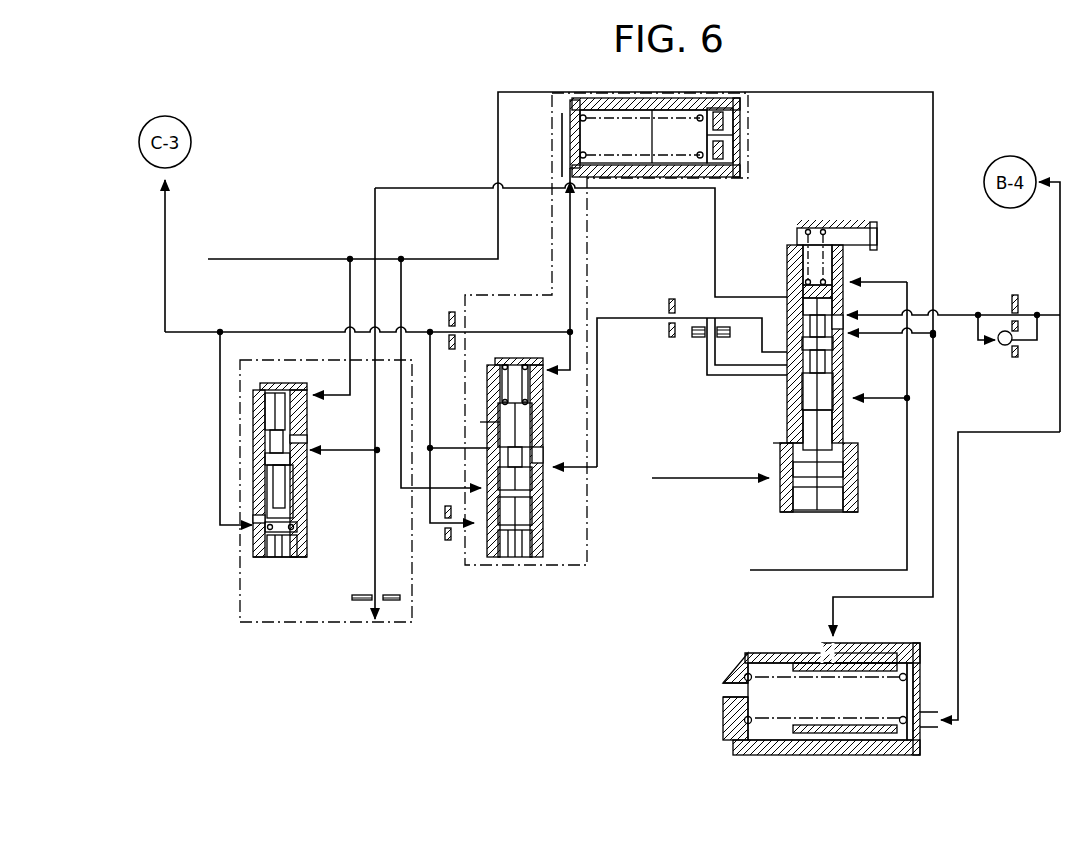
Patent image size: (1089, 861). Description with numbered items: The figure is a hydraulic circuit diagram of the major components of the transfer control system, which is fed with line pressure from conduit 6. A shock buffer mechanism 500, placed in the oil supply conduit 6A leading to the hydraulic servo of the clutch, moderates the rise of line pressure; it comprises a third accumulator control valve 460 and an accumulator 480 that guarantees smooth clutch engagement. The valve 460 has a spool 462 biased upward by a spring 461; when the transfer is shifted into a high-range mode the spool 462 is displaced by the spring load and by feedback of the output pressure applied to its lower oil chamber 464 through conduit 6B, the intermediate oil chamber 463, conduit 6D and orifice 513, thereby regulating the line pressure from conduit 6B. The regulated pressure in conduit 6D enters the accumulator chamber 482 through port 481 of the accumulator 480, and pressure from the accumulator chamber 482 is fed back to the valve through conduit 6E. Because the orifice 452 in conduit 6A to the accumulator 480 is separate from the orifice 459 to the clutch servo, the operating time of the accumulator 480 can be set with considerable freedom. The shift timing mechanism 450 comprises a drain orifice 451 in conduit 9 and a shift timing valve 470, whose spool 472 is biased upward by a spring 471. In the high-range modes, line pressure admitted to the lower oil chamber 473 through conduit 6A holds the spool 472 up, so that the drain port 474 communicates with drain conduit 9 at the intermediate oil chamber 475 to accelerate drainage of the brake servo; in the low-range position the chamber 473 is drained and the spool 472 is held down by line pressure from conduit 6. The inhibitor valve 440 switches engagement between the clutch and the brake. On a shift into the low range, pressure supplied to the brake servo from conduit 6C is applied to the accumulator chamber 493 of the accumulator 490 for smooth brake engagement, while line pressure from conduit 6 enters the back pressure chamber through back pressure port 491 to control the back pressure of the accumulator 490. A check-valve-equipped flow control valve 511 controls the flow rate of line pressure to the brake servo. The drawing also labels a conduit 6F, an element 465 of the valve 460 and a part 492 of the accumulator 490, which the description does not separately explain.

The conduit 6 is at (275, 259).
The oil supply conduit 6A is at (288, 332).
The conduit 6B is at (635, 318).
The conduit 6C is at (958, 315).
The conduit 6D is at (448, 445).
The conduit 6E is at (568, 310).
The branch line 6F is at (962, 555).
The drain conduit 9 is at (657, 192).
The inhibitor valve 440 is at (772, 493).
The shift timing mechanism 450 is at (316, 633).
The drain orifice 451 is at (362, 597).
The orifice 452 is at (448, 320).
The orifice 459 is at (668, 303).
The third accumulator control valve 460 is at (561, 511).
The spring 461 is at (528, 400).
The spool 462 is at (520, 463).
The intermediate oil chamber 463 is at (530, 455).
The lower oil chamber 464 is at (530, 528).
The valve piston 465 is at (520, 427).
The shift timing valve 470 is at (251, 533).
The spring 471 is at (297, 529).
The spool 472 is at (297, 498).
The lower oil chamber 473 is at (282, 522).
The drain port 474 is at (312, 432).
The intermediate oil chamber 475 is at (263, 448).
The accumulator 480 is at (677, 99).
The port 481 is at (566, 168).
The accumulator chamber 482 is at (563, 127).
The accumulator 490 is at (812, 680).
The back pressure port 491 is at (832, 642).
The cylinder sleeve 492 is at (877, 657).
The accumulator chamber 493 is at (921, 725).
The shock buffer mechanism 500 is at (761, 131).
The check-valve-equipped flow control valve 511 is at (1015, 343).
The orifice 513 is at (447, 538).